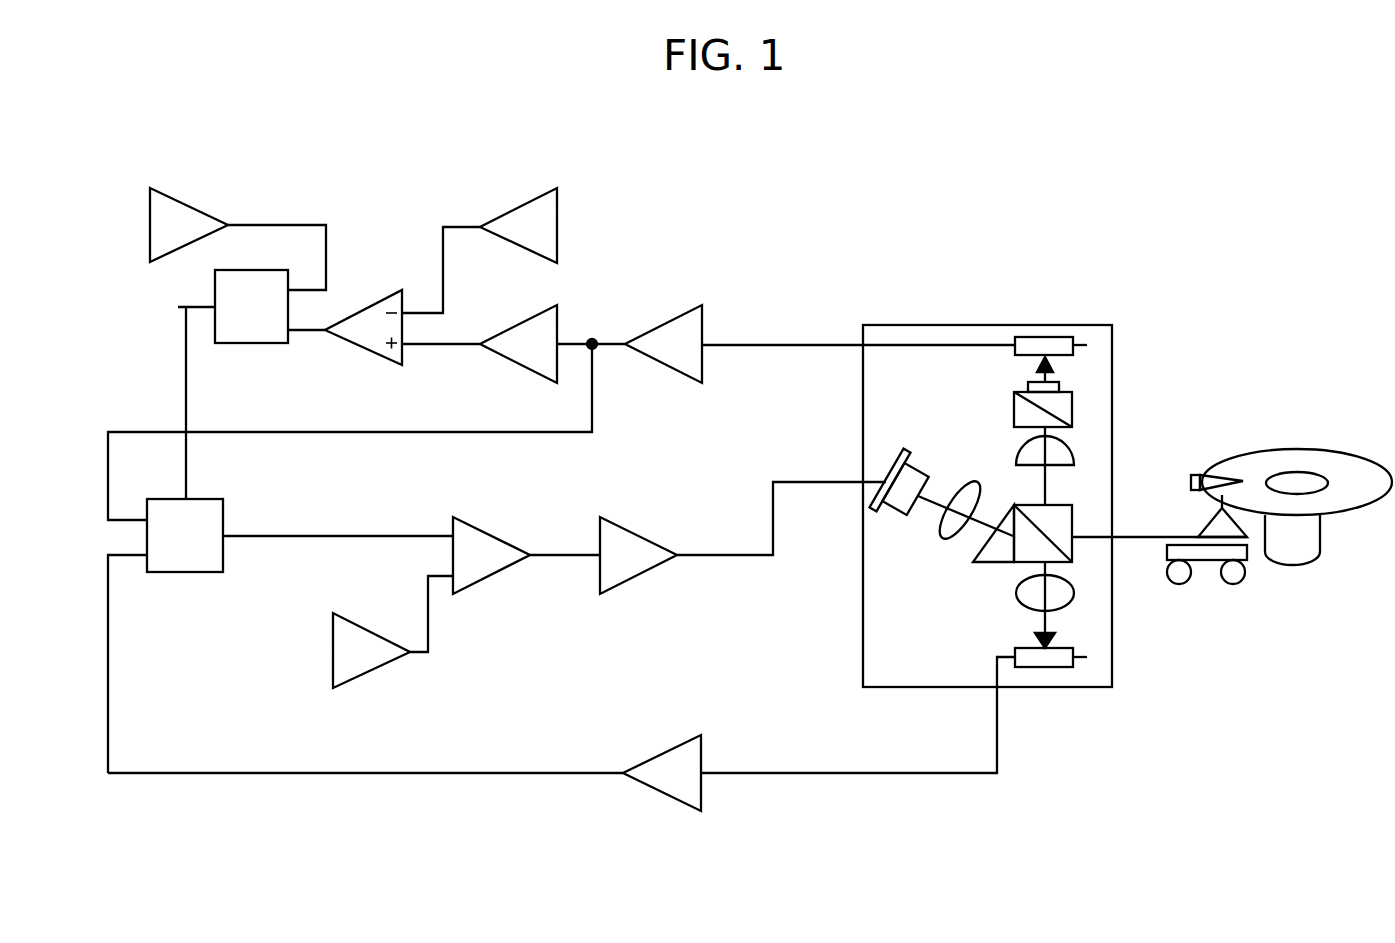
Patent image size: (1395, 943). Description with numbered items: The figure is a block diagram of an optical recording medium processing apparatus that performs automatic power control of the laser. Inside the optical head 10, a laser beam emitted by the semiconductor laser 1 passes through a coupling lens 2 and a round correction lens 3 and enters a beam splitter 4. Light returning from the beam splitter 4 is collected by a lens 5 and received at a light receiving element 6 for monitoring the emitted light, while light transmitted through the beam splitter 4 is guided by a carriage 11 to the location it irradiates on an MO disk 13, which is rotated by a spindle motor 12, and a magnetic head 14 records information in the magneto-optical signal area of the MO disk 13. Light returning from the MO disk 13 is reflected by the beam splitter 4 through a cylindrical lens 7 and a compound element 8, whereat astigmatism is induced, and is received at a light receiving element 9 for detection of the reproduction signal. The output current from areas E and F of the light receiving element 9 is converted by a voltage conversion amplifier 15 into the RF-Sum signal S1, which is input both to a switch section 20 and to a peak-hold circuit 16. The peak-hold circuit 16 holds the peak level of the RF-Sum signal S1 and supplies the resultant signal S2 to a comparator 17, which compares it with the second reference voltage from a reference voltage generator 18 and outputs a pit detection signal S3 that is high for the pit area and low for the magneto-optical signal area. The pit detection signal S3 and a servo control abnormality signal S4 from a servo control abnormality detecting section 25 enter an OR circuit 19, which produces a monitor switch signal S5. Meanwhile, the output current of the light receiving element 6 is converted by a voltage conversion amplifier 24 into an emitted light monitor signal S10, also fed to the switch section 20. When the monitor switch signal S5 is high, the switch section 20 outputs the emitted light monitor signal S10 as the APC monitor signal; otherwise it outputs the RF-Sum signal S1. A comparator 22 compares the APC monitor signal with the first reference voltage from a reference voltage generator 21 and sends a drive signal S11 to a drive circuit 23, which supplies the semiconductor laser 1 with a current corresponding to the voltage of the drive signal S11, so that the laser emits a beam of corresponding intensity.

The semiconductor laser 1 is at (902, 484).
The coupling lens 2 is at (956, 519).
The round correction lens 3 is at (988, 546).
The beam splitter 4 is at (1054, 540).
The lens 5 is at (1055, 596).
The light receiving element 6 is at (1009, 660).
The cylindrical lens 7 is at (1057, 455).
The compound element 8 is at (1052, 404).
The light receiving element 9 is at (1020, 354).
The optical head 10 is at (987, 487).
The carriage 11 is at (1188, 539).
The spindle motor 12 is at (1313, 540).
The MO disk 13 is at (1297, 466).
The magnetic head 14 is at (1210, 463).
The voltage conversion amplifier 15 is at (681, 353).
The peak-hold circuit 16 is at (518, 356).
The comparator 17 is at (363, 344).
The reference voltage generator 18 is at (491, 213).
The logical sum (OR) circuit 19 is at (251, 321).
The switch section 20 is at (185, 553).
The reference voltage generator 21 is at (407, 660).
The comparator 22 is at (494, 559).
The drive circuit 23 is at (638, 562).
The voltage conversion amplifier 24 is at (662, 784).
The servo control abnormality detecting section 25 is at (189, 215).
The RF-Sum signal S1 is at (607, 344).
The peak-held signal S2 is at (455, 344).
The pit detection signal S3 is at (305, 330).
The servo control abnormality signal S4 is at (327, 262).
The monitor switch signal S5 is at (178, 307).
The emitted light monitor signal S10 is at (313, 773).
The drive signal S11 is at (548, 555).